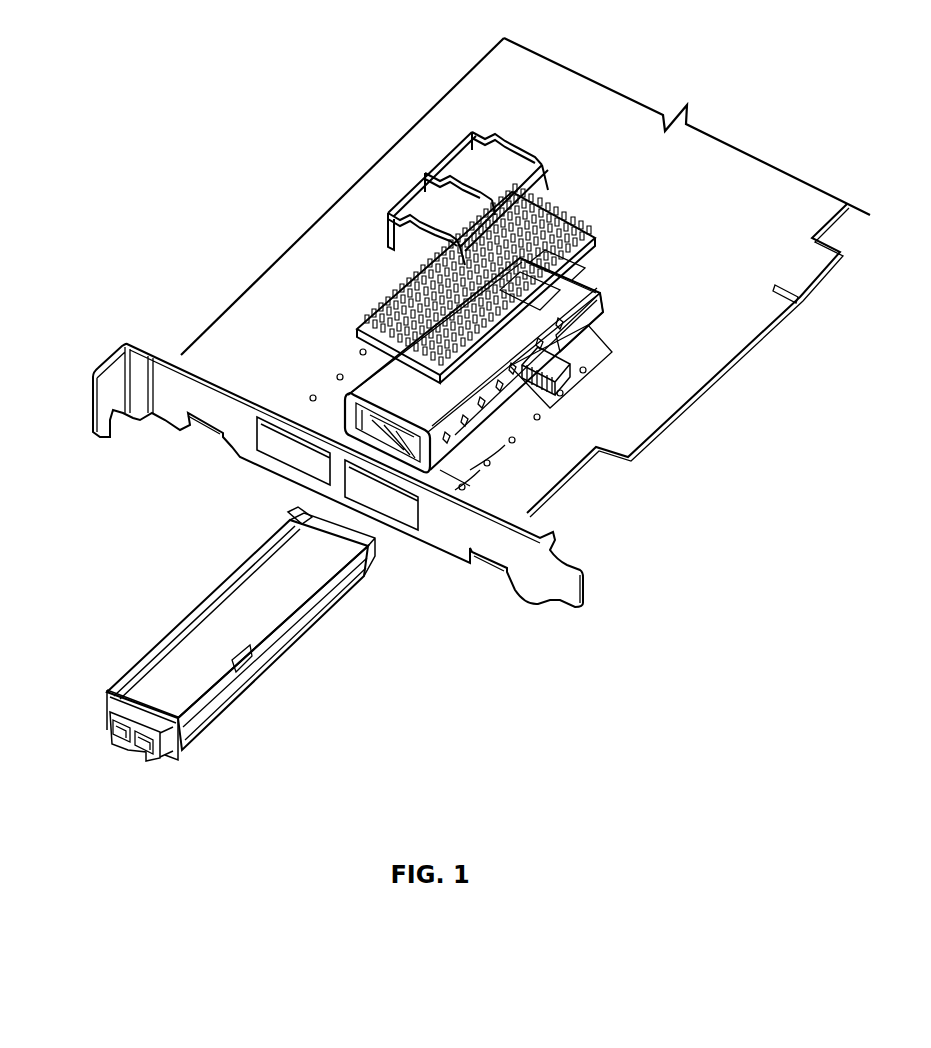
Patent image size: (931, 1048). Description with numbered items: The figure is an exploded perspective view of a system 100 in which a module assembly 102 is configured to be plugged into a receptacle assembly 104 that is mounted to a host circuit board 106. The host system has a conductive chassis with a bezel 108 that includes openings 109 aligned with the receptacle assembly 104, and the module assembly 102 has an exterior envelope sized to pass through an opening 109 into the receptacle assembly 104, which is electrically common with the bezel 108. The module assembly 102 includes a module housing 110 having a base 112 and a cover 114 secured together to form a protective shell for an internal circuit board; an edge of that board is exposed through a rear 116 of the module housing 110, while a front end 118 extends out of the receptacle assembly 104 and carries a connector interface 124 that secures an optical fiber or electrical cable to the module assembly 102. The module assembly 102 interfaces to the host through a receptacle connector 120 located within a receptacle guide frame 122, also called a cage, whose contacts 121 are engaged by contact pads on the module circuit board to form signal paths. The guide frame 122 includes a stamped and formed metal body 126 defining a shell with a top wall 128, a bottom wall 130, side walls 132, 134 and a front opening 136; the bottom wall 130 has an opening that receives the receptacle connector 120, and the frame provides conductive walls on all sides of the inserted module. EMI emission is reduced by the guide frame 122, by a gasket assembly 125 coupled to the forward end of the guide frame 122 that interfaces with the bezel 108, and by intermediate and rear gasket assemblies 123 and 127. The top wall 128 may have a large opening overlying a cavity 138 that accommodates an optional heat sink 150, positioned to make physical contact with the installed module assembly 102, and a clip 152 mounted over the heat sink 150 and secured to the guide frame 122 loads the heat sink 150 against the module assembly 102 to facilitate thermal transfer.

The system 100 is at (180, 42).
The module assembly 102 is at (183, 572).
The receptacle assembly 104 is at (612, 226).
The host circuit board 106 is at (717, 355).
The bezel 108 is at (163, 415).
The openings 109 is at (298, 455).
The module housing 110 is at (259, 664).
The base 112 is at (300, 640).
The cover 114 is at (265, 558).
The rear 116 is at (350, 590).
The front end 118 is at (101, 712).
The receptacle connector 120 is at (578, 374).
The contacts 121 is at (570, 396).
The receptacle guide frame 122 is at (600, 312).
The intermediate gasket assembly 123 is at (590, 264).
The connector interface 124 is at (120, 752).
The gasket assembly 125 is at (336, 398).
The stamped and formed metal body 126 is at (503, 452).
The rear gasket assembly 127 is at (584, 330).
The top wall 128 is at (585, 293).
The bottom wall 130 is at (476, 478).
The side wall 132 is at (525, 425).
The side wall 134 is at (400, 390).
The front opening 136 is at (392, 445).
The cavity 138 is at (422, 388).
The heat sink 150 is at (377, 298).
The clip 152 is at (489, 131).